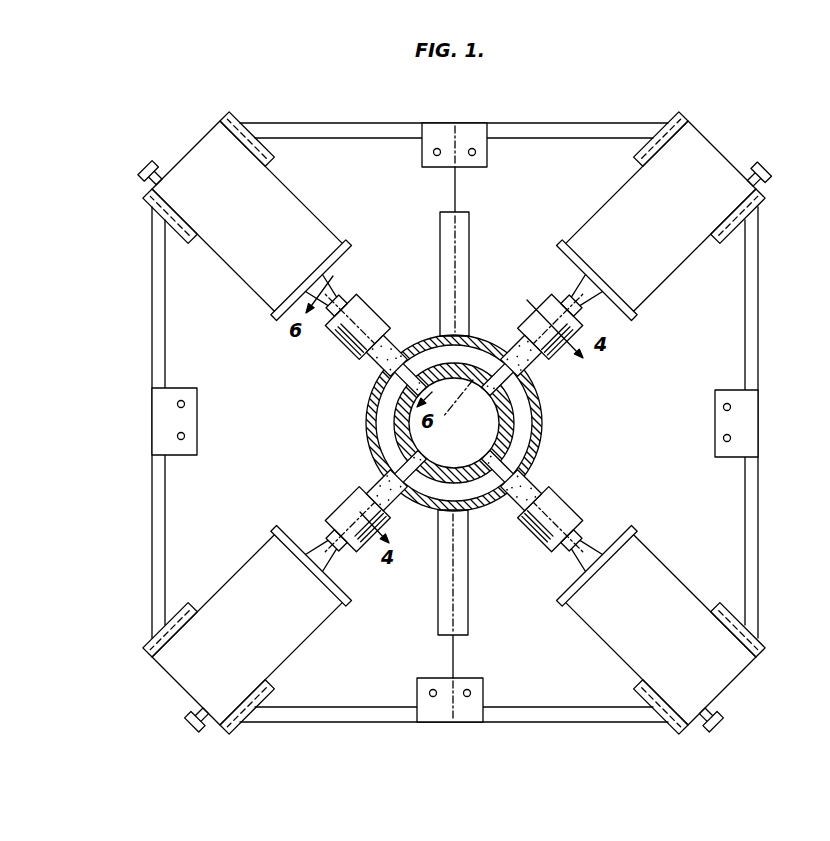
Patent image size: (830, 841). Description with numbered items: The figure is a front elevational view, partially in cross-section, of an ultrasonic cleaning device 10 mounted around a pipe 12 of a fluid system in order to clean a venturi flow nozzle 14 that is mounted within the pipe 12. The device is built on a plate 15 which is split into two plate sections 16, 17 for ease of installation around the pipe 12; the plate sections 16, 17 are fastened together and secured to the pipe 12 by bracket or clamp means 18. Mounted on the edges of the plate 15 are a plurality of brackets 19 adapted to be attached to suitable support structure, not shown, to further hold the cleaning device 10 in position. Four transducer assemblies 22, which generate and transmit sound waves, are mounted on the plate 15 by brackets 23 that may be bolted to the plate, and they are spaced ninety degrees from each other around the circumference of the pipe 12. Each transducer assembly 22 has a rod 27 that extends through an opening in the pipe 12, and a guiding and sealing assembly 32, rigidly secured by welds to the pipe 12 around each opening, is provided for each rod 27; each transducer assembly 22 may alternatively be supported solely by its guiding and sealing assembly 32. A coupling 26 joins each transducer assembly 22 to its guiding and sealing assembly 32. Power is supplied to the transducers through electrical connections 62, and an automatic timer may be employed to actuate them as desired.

The ultrasonic cleaning device 10 is at (467, 397).
The pipe 12 is at (541, 406).
The venturi flow nozzle 14 is at (507, 427).
The plate 15 is at (571, 121).
The plate section 16 is at (727, 517).
The plate section 17 is at (173, 497).
The bracket or clamp means 18 is at (467, 290).
The bracket 19 is at (471, 129).
The transducer assembly 22 is at (318, 241).
The bracket 23 is at (236, 119).
The coupling 26 is at (341, 296).
The rod 27 is at (375, 392).
The guiding and sealing assembly 32 is at (374, 322).
The electrical connection 62 is at (773, 174).